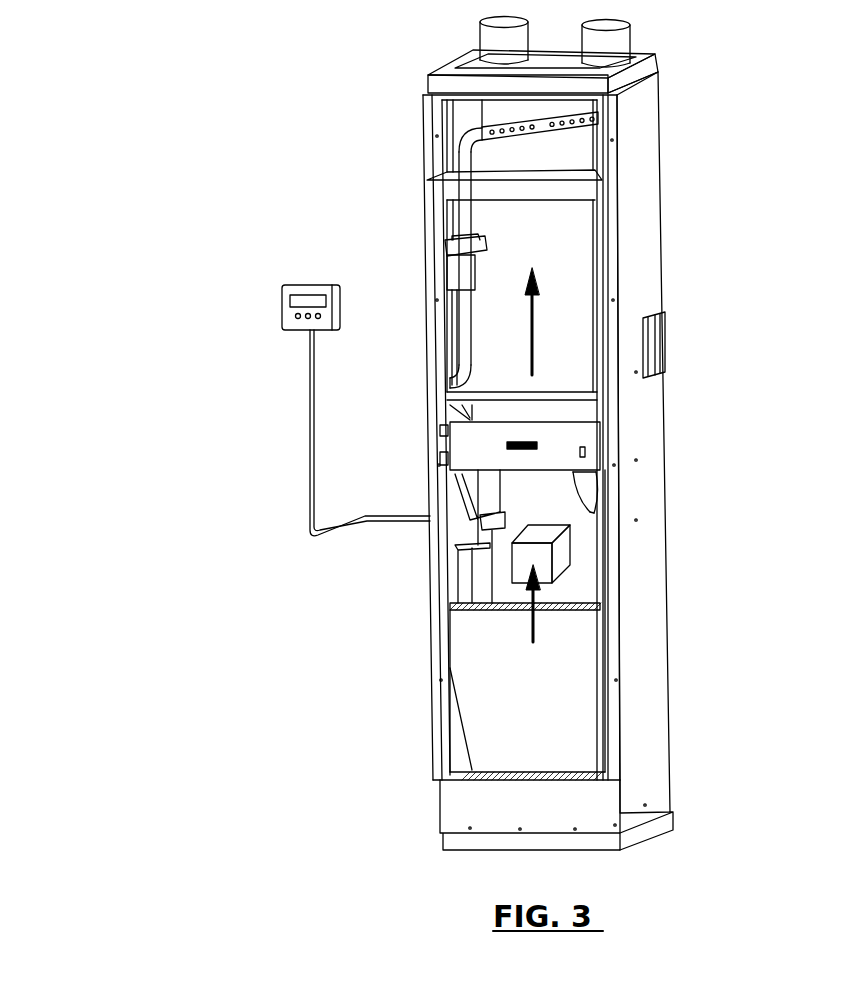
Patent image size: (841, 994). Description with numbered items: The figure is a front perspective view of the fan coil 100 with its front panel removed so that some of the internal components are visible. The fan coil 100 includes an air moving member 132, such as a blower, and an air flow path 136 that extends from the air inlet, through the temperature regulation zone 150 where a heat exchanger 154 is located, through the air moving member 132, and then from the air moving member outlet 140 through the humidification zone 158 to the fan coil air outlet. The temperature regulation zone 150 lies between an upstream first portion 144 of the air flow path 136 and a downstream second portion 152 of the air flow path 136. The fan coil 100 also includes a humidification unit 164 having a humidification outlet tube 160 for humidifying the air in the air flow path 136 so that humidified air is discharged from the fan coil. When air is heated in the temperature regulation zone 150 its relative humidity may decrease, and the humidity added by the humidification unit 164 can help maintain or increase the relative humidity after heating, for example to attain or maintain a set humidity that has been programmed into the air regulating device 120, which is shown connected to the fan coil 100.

The fan coil 100 is at (218, 125).
The air regulating device 120 is at (282, 292).
The air moving member 132 is at (575, 508).
The air flow path 136 is at (537, 648).
The air moving member outlet 140 is at (548, 420).
The upstream first portion 144 is at (573, 740).
The temperature regulation zone 150 is at (563, 566).
The downstream second portion 152 is at (458, 128).
The heat exchanger 154 is at (570, 528).
The humidification zone 158 is at (573, 163).
The humidification outlet tube 160 is at (508, 135).
The humidification unit 164 is at (450, 240).